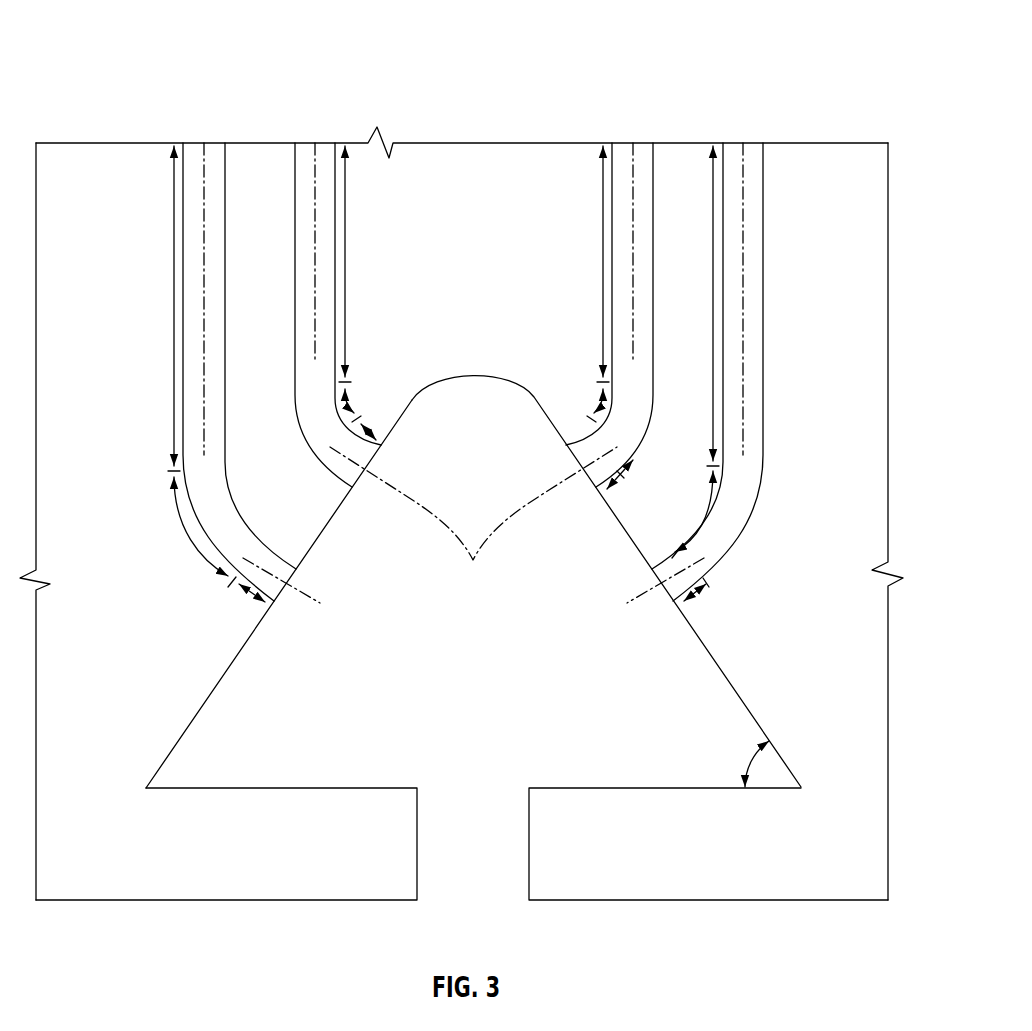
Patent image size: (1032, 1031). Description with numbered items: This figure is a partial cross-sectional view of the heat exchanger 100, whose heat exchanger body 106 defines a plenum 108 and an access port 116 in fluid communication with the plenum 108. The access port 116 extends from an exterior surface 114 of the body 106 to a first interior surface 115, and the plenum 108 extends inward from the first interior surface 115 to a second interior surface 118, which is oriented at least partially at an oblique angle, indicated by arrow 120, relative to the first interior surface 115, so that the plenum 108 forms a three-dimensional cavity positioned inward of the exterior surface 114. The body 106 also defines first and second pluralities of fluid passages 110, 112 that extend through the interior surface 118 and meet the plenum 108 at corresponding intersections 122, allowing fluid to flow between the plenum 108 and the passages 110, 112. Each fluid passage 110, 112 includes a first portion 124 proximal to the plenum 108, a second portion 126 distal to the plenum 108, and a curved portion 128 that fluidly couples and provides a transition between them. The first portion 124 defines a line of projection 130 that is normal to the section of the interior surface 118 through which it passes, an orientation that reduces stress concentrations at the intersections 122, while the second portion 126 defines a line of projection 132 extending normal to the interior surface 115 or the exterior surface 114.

The heat exchanger 100 is at (133, 38).
The heat exchanger body 106 is at (464, 143).
The plenum 108 is at (473, 582).
The first plurality of fluid passages 110 is at (201, 131).
The second plurality of fluid passages 112 is at (634, 131).
The exterior surface 114 is at (115, 900).
The first interior surface 115 is at (337, 788).
The access port 116 is at (438, 884).
The second interior surface 118 is at (208, 699).
The oblique angle 120 is at (745, 776).
The intersection 122 is at (385, 465).
The first portion 124 is at (382, 418).
The second portion 126 is at (173, 322).
The curved portion 128 is at (189, 529).
The line of projection 130 is at (473, 562).
The line of projection 132 is at (200, 290).